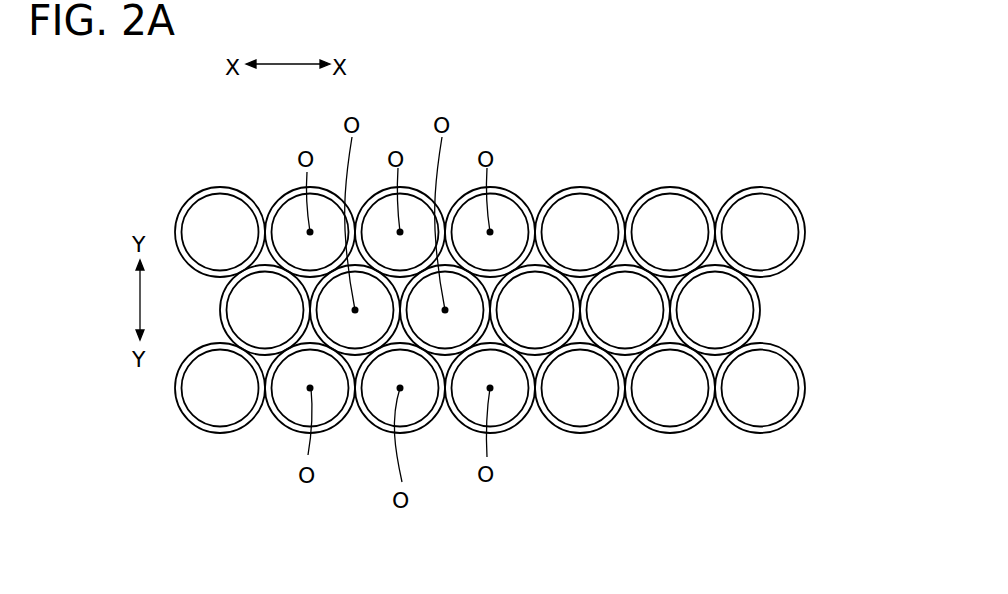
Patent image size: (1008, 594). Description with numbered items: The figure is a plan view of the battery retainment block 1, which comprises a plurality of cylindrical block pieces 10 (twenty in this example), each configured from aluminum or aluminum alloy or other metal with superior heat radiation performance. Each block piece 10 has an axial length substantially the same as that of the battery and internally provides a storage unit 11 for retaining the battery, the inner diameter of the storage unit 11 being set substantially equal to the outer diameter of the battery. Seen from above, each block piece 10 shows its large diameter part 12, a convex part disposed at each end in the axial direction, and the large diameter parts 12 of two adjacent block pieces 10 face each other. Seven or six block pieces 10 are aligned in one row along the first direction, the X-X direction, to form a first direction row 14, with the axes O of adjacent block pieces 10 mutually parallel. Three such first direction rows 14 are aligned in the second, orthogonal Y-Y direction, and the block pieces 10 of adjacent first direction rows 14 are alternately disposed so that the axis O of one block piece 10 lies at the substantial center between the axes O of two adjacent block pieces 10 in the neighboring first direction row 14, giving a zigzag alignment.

The battery retainment block 1 is at (785, 110).
The block piece 10 is at (205, 188).
The storage unit 11 is at (490, 271).
The large diameter part 12 is at (516, 313).
The first direction row 14 is at (825, 232).